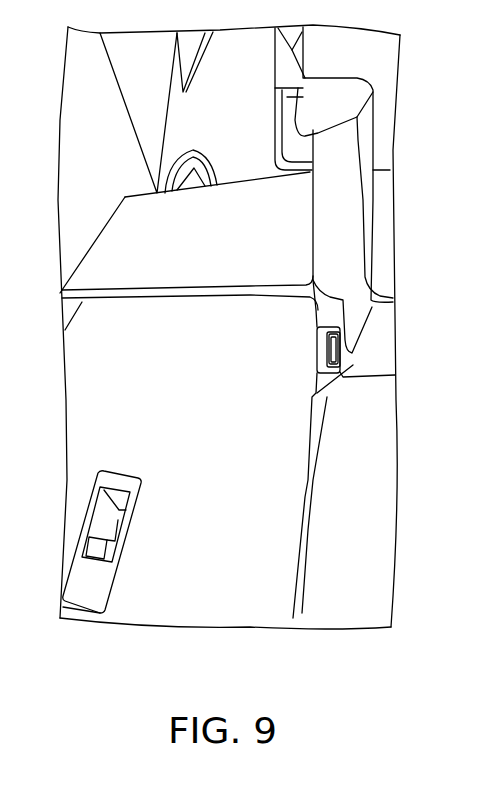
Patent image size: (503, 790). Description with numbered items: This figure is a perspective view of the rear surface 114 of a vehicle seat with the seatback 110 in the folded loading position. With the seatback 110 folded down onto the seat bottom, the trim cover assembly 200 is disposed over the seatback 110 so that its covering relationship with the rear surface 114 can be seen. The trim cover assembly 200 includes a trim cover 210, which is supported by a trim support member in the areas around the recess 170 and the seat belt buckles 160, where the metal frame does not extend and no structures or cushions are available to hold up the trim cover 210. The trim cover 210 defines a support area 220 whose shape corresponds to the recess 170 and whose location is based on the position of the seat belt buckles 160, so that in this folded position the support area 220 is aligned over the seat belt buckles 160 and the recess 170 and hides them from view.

The seatback 110 is at (338, 540).
The rear surface 114 is at (170, 384).
The seat belt buckle 160 is at (402, 351).
The recess 170 is at (355, 365).
The trim cover assembly 200 is at (293, 502).
The trim cover 210 is at (270, 329).
The support area 220 is at (288, 367).